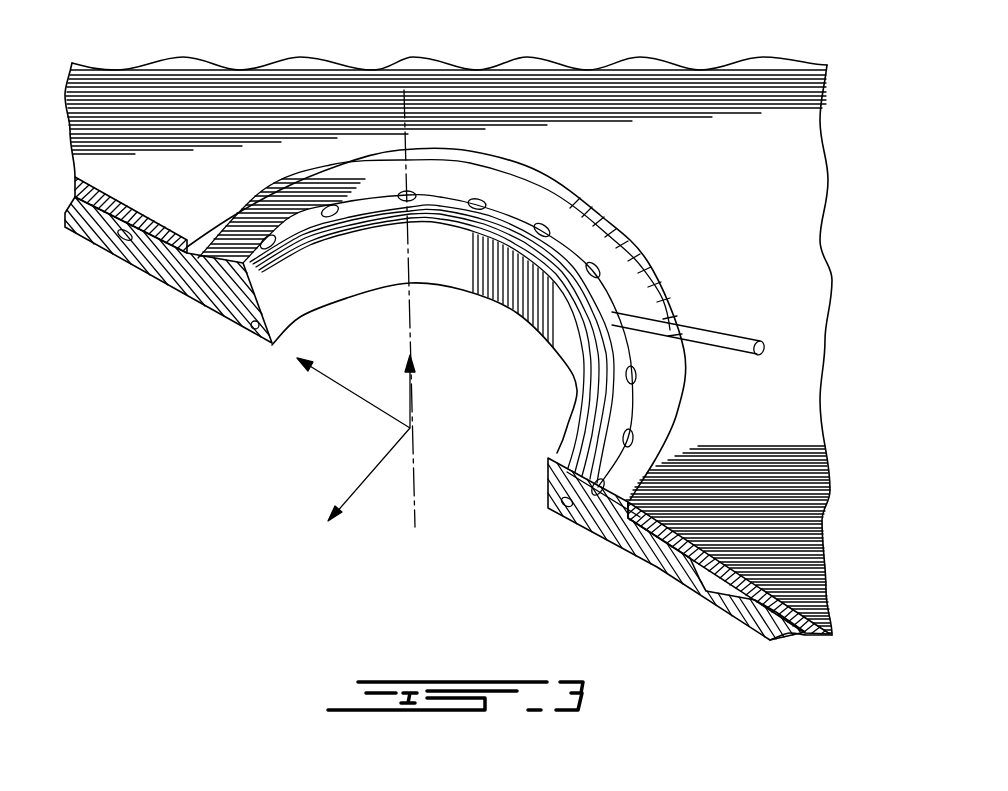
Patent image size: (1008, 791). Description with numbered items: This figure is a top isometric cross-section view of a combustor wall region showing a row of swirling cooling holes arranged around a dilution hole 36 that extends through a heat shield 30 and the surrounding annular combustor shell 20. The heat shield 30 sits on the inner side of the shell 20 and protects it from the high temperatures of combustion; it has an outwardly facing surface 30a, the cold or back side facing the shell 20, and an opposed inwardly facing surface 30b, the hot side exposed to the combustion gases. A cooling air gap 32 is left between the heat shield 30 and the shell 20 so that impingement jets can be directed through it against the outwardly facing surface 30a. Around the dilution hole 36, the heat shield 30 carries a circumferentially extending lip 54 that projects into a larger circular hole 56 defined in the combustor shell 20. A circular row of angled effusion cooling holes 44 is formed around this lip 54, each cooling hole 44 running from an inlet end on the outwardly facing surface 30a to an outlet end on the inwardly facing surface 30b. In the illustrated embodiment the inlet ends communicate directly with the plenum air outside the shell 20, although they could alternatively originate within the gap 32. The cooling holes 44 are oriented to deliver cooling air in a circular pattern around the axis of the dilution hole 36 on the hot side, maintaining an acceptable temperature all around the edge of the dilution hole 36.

The annular shell 20 is at (768, 406).
The heat shield 30 is at (160, 258).
The outwardly facing surface 30a is at (758, 580).
The inwardly facing surface 30b is at (733, 604).
The cooling air gap 32 is at (73, 215).
The dilution hole 36 is at (487, 420).
The effusion cooling holes 44 is at (593, 270).
The lip 54 is at (297, 278).
The circular hole 56 is at (333, 160).